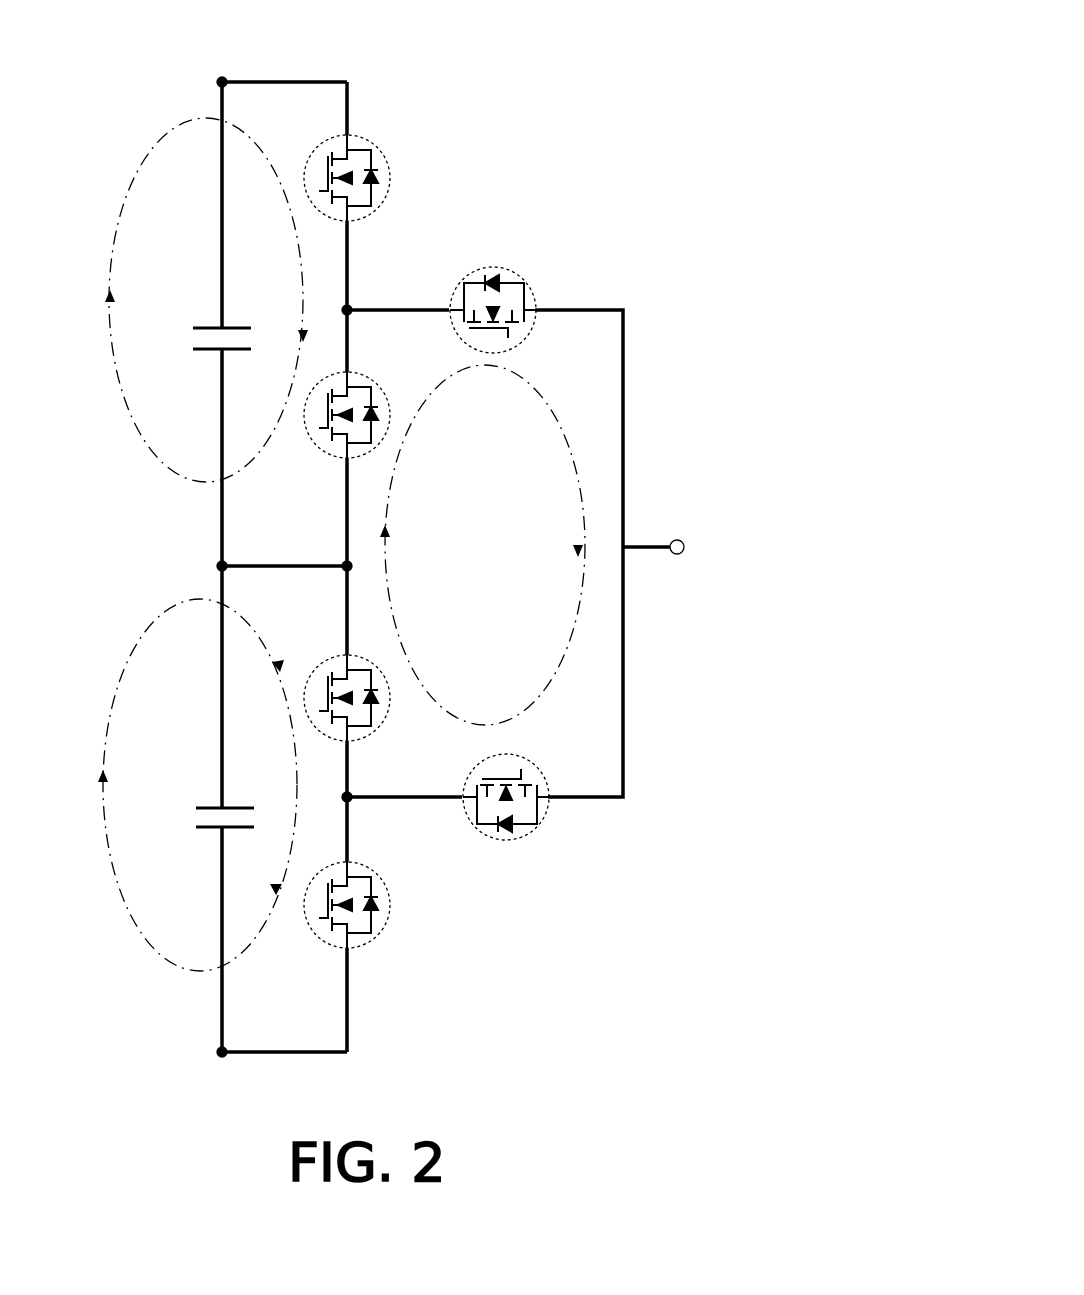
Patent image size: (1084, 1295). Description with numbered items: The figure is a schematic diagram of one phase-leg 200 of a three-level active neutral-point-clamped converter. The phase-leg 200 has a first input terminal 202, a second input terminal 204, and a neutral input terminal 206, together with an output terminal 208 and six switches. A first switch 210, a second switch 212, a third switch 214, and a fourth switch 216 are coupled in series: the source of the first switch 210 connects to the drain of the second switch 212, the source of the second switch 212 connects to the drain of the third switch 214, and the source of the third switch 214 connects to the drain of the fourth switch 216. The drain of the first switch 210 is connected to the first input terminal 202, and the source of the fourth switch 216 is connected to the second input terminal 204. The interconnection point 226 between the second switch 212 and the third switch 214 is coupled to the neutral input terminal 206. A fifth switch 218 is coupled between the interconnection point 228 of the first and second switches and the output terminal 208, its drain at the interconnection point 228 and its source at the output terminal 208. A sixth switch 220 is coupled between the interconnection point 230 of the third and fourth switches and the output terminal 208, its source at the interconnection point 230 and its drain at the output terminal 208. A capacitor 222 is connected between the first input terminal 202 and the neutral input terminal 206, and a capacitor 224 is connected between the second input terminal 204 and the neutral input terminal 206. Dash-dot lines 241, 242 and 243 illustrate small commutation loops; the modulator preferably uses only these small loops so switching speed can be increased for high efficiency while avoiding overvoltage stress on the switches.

The phase-leg 200 is at (833, 152).
The first input terminal 202 is at (221, 82).
The second input terminal 204 is at (222, 1050).
The neutral input terminal 206 is at (222, 566).
The output terminal 208 is at (676, 538).
The first switch 210 is at (372, 152).
The second switch 212 is at (385, 437).
The third switch 214 is at (388, 690).
The fourth switch 216 is at (390, 935).
The fifth switch 218 is at (512, 275).
The sixth switch 220 is at (540, 765).
The capacitor 222 is at (205, 325).
The capacitor 224 is at (210, 805).
The interconnection point 226 is at (350, 566).
The interconnection point 228 is at (345, 310).
The interconnection point 230 is at (345, 797).
The line 241 is at (128, 410).
The line 242 is at (130, 918).
The line 243 is at (557, 427).